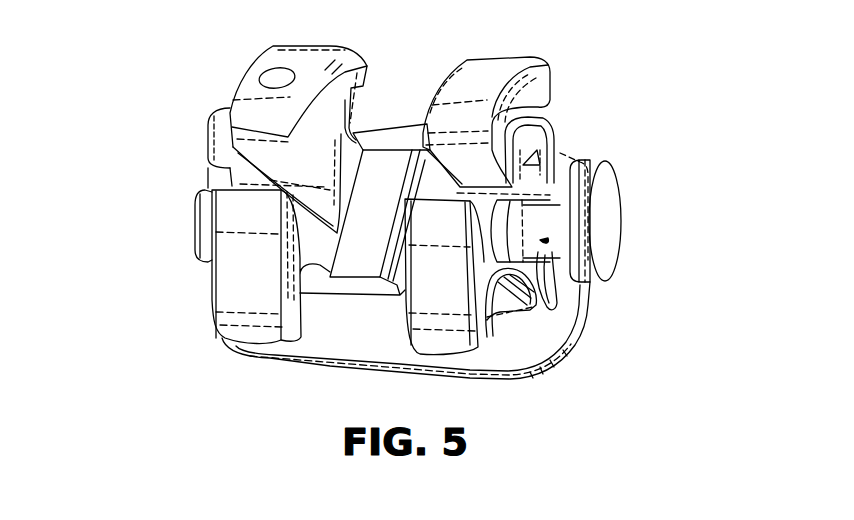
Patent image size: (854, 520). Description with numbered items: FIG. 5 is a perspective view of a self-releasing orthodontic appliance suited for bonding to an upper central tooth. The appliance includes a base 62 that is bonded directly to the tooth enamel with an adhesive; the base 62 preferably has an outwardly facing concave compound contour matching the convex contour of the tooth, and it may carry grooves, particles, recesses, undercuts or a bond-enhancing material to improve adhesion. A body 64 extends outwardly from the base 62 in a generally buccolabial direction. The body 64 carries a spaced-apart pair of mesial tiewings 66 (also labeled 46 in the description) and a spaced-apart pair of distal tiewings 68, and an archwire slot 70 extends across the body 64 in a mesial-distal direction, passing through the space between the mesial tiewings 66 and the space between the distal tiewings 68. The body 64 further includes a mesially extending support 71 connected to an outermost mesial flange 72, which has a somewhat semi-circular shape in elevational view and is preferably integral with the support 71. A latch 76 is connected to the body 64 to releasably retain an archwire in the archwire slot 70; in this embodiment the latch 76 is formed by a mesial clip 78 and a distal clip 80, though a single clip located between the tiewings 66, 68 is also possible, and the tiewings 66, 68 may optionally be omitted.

The mesial tiewings 46 is at (148, 113).
The base 62 is at (573, 352).
The body 64 is at (346, 290).
The mesial tiewings 66 is at (548, 83).
The distal tiewings 68 is at (287, 58).
The archwire slot 70 is at (270, 157).
The mesially extending support 71 is at (552, 217).
The outermost mesial flange 72 is at (612, 231).
The latch 76 is at (205, 81).
The mesial clip 78 is at (541, 145).
The distal clip 80 is at (197, 228).